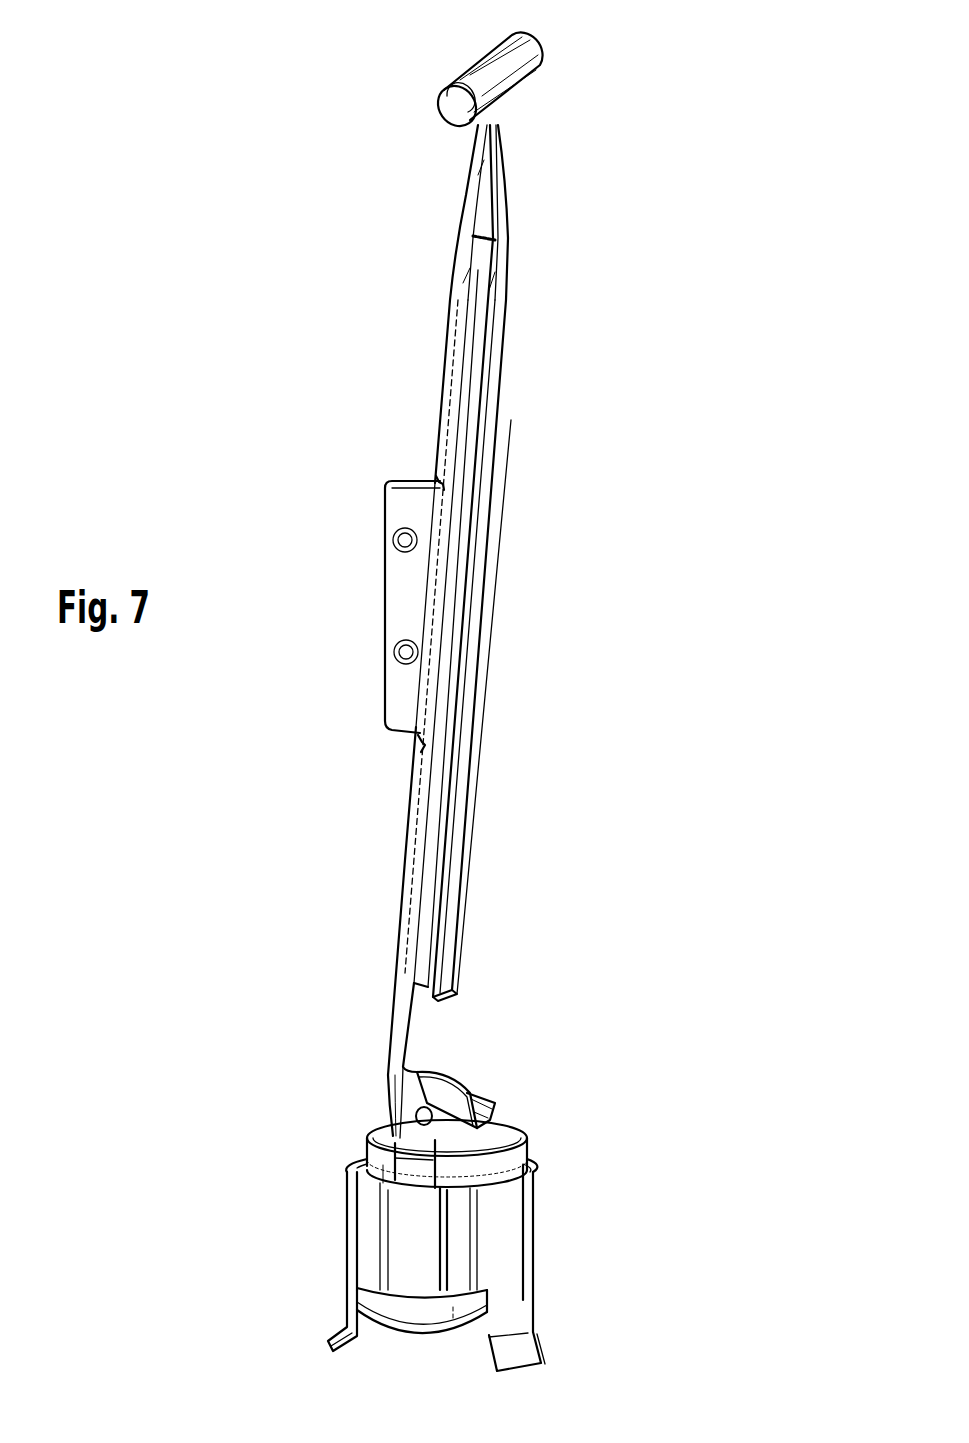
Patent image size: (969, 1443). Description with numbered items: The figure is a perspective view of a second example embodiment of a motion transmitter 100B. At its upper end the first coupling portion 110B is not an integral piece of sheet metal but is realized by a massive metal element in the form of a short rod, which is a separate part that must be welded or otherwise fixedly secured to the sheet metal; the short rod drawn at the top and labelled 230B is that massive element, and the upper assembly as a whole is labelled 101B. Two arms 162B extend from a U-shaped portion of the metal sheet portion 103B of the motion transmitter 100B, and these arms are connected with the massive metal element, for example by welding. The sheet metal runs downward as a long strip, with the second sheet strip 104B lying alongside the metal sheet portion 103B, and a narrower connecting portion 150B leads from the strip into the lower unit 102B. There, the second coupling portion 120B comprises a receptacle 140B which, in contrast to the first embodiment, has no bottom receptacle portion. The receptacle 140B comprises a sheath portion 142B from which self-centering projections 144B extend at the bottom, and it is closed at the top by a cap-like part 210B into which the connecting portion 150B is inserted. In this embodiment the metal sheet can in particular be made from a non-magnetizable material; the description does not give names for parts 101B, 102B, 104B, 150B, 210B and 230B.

The motion transmitter 100B is at (614, 566).
The actuating unit 101B is at (346, 118).
The lancet holder unit 102B is at (286, 1310).
The metal sheet portion 103B is at (499, 736).
The first spring arm 104B is at (470, 413).
The first coupling portion 110B is at (636, 86).
The second coupling portion 120B is at (584, 1173).
The receptacle 140B is at (347, 1227).
The sheath portion 142B is at (508, 1235).
The self-centering projections 144B is at (513, 1353).
The connecting rod 150B is at (444, 1040).
The arms 162B is at (473, 200).
The cap 210B is at (497, 1127).
The handle 230B is at (447, 51).